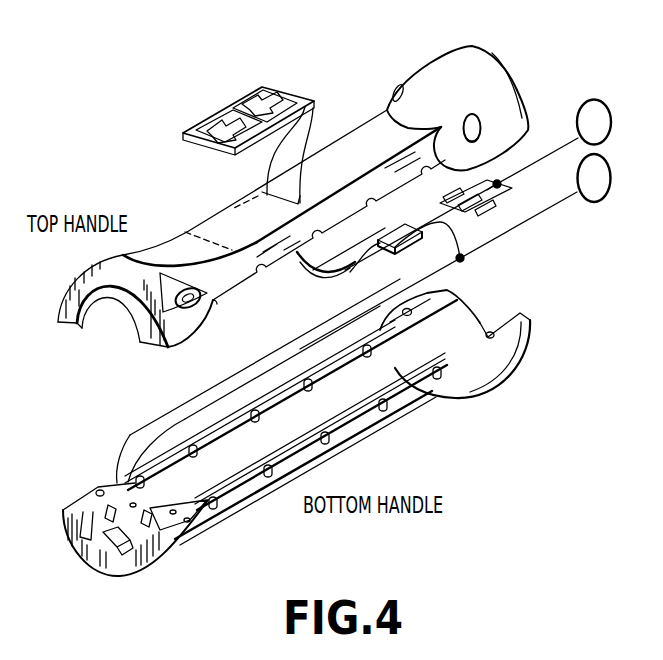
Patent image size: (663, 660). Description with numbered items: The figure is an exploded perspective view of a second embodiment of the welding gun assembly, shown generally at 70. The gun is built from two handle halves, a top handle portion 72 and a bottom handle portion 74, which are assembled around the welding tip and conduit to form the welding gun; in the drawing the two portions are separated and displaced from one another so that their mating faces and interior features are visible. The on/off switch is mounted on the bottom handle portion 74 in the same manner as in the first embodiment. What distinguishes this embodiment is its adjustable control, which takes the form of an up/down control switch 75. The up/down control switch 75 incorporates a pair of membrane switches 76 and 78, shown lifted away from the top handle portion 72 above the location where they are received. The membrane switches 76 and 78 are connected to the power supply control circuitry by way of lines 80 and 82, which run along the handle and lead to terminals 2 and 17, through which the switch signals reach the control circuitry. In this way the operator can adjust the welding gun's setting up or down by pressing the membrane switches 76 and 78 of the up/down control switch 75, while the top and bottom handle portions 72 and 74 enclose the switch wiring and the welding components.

The gun assembly 70 is at (93, 348).
The top handle portion 72 is at (367, 143).
The bottom handle portion 74 is at (410, 397).
The up/down control switch 75 is at (238, 113).
The membrane switch 76 is at (185, 128).
The membrane switch 78 is at (267, 87).
The line 80 is at (547, 157).
The line 82 is at (547, 209).
The terminal 2 is at (594, 122).
The terminal 17 is at (594, 178).